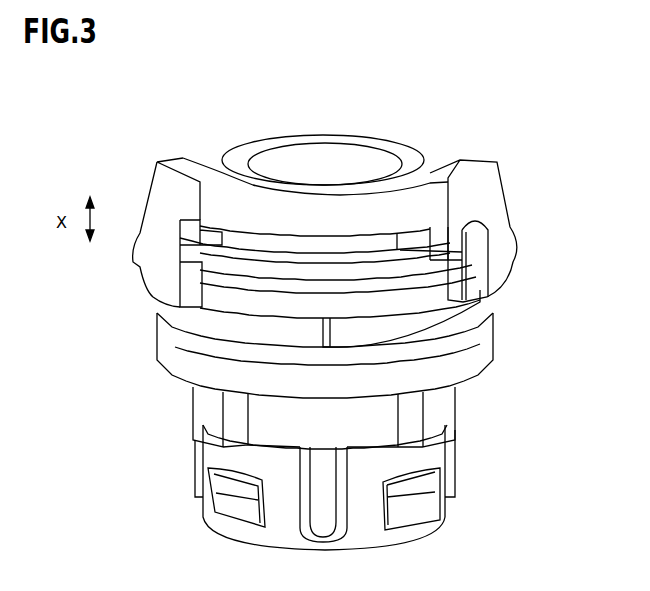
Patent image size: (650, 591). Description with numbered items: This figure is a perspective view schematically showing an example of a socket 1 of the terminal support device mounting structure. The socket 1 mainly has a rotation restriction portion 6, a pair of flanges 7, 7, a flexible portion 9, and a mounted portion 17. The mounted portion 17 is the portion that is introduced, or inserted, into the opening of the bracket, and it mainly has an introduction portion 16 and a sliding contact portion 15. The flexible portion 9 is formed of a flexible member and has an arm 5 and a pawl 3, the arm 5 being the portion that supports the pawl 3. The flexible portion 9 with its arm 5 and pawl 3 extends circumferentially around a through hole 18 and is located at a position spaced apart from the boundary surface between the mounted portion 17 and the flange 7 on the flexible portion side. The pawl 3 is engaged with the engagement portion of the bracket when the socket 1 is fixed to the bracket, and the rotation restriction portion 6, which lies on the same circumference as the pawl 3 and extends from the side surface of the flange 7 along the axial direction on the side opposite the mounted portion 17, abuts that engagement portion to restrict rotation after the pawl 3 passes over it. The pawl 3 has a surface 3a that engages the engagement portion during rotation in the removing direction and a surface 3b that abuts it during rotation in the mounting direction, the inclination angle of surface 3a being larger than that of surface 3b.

The socket 1 is at (457, 116).
The pawl 3 is at (460, 308).
The surface of pawl 3a is at (467, 283).
The surface of pawl 3b is at (403, 237).
The arm 5 is at (370, 275).
The rotation restriction portion 6 is at (470, 268).
The flange 7 is at (240, 302).
The flexible portion 9 is at (565, 288).
The sliding contact portion 15 is at (303, 338).
The introduction portion 16 is at (387, 326).
The mounted portion 17 is at (575, 335).
The through hole 18 is at (365, 148).